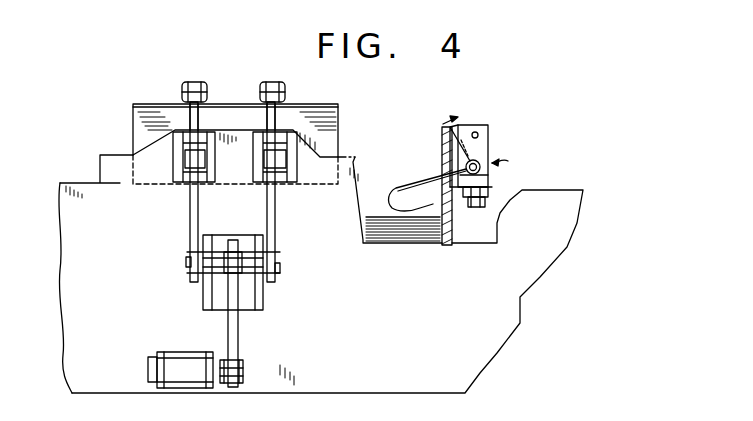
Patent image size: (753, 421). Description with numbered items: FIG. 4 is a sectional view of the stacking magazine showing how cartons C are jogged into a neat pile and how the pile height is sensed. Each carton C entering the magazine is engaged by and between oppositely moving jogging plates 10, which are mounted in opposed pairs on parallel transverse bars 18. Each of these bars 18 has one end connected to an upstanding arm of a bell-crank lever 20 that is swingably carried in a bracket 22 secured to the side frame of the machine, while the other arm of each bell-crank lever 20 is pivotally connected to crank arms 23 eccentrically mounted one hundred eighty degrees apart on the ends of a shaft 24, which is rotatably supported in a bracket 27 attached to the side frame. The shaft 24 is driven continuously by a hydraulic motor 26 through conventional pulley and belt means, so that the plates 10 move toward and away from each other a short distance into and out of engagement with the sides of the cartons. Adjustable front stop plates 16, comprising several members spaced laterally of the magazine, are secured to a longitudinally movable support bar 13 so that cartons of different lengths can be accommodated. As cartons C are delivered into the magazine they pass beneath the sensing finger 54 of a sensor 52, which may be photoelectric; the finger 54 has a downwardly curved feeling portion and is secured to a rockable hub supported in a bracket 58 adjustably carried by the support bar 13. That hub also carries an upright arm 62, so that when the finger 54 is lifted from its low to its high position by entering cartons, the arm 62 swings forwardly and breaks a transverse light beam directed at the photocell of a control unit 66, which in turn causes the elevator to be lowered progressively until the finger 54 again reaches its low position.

The jogging plates 10 is at (342, 119).
The support bar 13 is at (455, 228).
The front stop plates 16 is at (443, 130).
The transverse bars 18 is at (195, 84).
The bell-crank lever 20 is at (192, 118).
The bracket 22 is at (190, 180).
The crank arms 23 is at (190, 225).
The shaft 24 is at (252, 252).
The hydraulic motor 26 is at (188, 361).
The bracket 27 is at (244, 308).
The sensor 52 is at (510, 160).
The sensing finger 54 is at (406, 182).
The bracket 58 is at (490, 192).
The upright arm 62 is at (455, 150).
The control unit 66 is at (490, 134).
The carton C is at (400, 240).